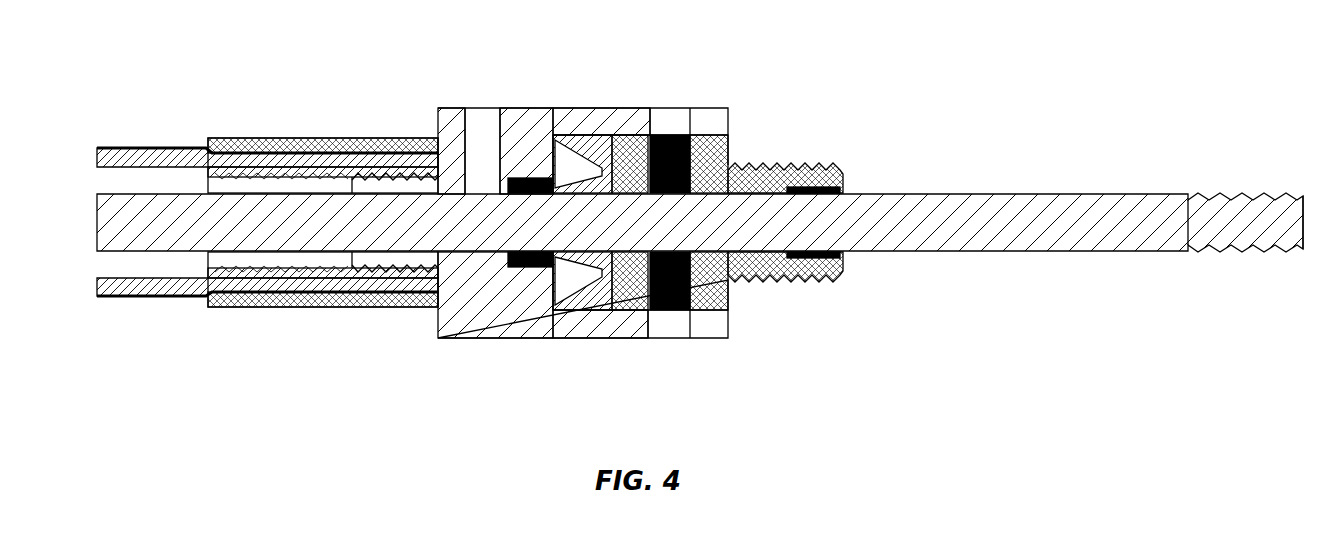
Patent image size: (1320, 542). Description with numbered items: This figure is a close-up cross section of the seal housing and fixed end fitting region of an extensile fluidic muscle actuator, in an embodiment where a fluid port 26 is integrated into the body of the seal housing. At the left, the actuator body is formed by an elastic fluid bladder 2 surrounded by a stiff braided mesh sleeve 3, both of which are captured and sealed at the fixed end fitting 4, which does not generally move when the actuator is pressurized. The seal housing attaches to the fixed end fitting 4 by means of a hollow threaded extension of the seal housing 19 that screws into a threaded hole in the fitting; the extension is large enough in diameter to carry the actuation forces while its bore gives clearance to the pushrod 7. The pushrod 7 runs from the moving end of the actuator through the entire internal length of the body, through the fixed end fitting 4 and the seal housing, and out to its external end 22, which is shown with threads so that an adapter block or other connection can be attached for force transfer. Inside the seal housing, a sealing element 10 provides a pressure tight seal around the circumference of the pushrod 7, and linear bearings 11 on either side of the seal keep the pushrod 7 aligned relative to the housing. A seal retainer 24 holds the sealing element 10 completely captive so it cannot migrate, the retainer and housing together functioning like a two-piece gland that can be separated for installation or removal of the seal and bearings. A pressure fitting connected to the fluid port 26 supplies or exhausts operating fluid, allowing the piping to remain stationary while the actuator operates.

The elastic fluid bladder 2 is at (127, 287).
The braided mesh sleeve 3 is at (143, 147).
The fixed end fitting 4 is at (309, 272).
The pushrod 7 is at (1013, 223).
The sealing element 10 is at (605, 262).
The linear bearings 11 is at (800, 260).
The hollow threaded extension of the seal housing 19 is at (400, 185).
The external end of the pushrod 22 is at (1243, 222).
The seal retainer 24 is at (719, 160).
The fluid port 26 is at (478, 138).